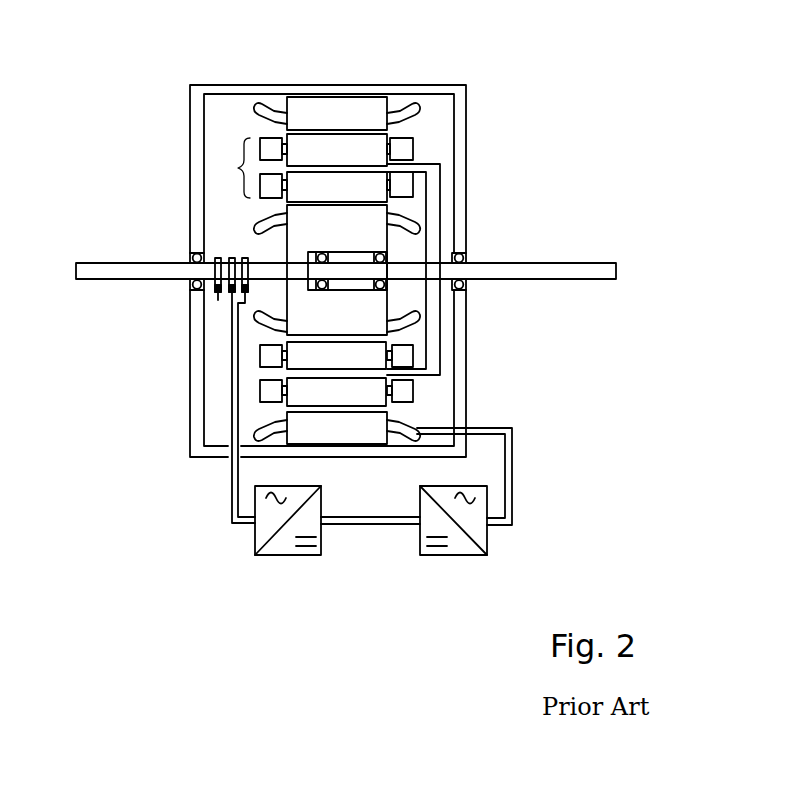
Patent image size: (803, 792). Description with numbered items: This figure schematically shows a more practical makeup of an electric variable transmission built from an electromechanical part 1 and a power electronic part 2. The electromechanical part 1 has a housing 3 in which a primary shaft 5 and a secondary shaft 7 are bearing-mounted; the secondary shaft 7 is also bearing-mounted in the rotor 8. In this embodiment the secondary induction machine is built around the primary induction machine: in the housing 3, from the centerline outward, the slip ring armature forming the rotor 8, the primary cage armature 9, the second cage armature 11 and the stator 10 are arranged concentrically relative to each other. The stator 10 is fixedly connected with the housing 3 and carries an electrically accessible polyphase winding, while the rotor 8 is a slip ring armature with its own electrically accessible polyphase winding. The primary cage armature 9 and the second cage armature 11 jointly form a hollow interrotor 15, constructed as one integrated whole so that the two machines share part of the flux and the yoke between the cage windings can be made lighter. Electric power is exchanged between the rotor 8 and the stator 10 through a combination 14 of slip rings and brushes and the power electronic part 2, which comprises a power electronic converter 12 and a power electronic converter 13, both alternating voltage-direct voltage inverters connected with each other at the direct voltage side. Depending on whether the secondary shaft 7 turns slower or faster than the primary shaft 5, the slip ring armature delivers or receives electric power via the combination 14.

The electromechanical part 1 is at (475, 79).
The power electronic part 2 is at (376, 557).
The housing 3 is at (236, 85).
The primary shaft 5 is at (113, 262).
The secondary shaft 7 is at (587, 262).
The rotor 8 is at (349, 240).
The primary cage armature 9 is at (373, 183).
The stator 10 is at (339, 112).
The second cage armature 11 is at (373, 150).
The power electronic converter 12 is at (282, 555).
The power electronic converter 13 is at (463, 555).
The combination of slip rings and brushes 14 is at (217, 300).
The interrotor 15 is at (233, 167).